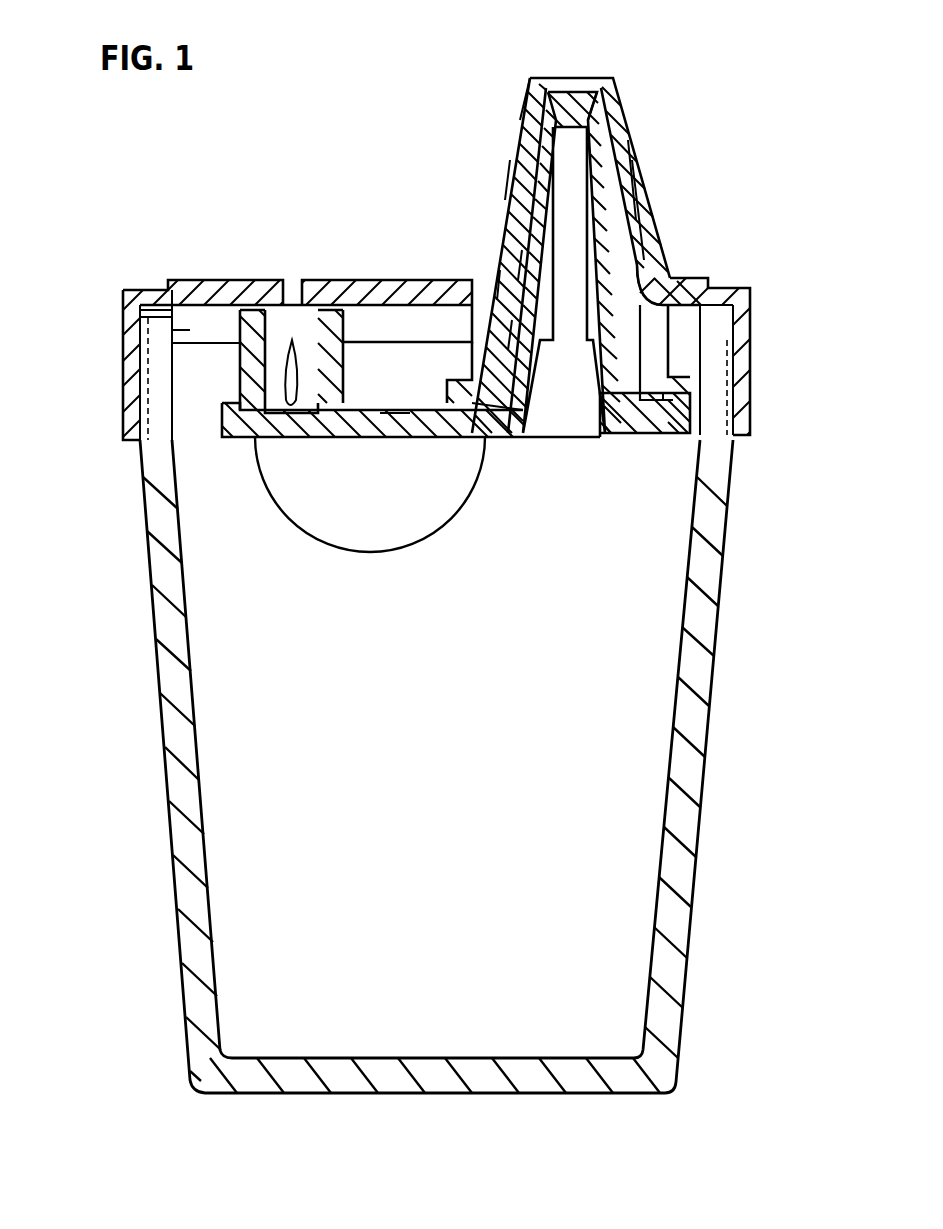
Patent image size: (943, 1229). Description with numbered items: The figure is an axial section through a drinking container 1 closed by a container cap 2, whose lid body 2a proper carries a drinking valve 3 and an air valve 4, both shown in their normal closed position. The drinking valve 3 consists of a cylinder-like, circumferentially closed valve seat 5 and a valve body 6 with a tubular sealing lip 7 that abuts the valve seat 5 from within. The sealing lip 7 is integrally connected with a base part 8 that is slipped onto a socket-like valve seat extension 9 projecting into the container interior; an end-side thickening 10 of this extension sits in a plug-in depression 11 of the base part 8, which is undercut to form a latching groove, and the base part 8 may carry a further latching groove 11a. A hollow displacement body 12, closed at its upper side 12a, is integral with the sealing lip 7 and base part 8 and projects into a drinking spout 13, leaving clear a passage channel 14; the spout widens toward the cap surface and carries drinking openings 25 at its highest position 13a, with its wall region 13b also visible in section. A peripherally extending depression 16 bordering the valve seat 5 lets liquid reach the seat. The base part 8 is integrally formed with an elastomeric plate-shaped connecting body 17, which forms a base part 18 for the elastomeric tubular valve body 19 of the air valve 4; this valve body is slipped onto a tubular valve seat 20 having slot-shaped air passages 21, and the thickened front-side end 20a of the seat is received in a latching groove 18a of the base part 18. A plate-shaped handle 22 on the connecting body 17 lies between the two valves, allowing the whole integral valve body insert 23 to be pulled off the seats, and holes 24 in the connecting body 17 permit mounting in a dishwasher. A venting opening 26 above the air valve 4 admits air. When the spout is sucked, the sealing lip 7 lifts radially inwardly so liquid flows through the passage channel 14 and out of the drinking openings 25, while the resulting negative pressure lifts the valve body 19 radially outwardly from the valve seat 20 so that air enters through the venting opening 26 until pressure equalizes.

The drinking container 1 is at (158, 770).
The container cap 2 is at (213, 276).
The lid body 2a is at (370, 282).
The drinking valve 3 is at (658, 218).
The air valve 4 is at (290, 392).
The valve seat 5 is at (650, 250).
The valve body 6 is at (510, 175).
The sealing lip 7 is at (520, 265).
The base part 8 is at (728, 433).
The valve seat extension 9 is at (500, 277).
The end-side thickening 10 is at (490, 400).
The plug-in depression 11 is at (468, 393).
The latching groove 11a is at (672, 398).
The displacement body 12 is at (627, 125).
The upper side 12a is at (603, 92).
The drinking spout 13 is at (640, 158).
The highest position 13a is at (573, 100).
The nozzle slit 13b is at (648, 178).
The passage channel 14 is at (540, 90).
The peripherally extending depression 16 is at (510, 333).
The connecting body 17 is at (455, 433).
The base part 18 is at (228, 415).
The latching groove 18a is at (225, 438).
The valve body 19 is at (190, 320).
The valve seat 20 is at (245, 335).
The front-side end 20a is at (235, 400).
The air passages 21 is at (297, 378).
The handle 22 is at (277, 477).
The valve body insert 23 is at (430, 447).
The holes 24 is at (392, 425).
The drinking openings 25 is at (565, 80).
The venting opening 26 is at (290, 375).